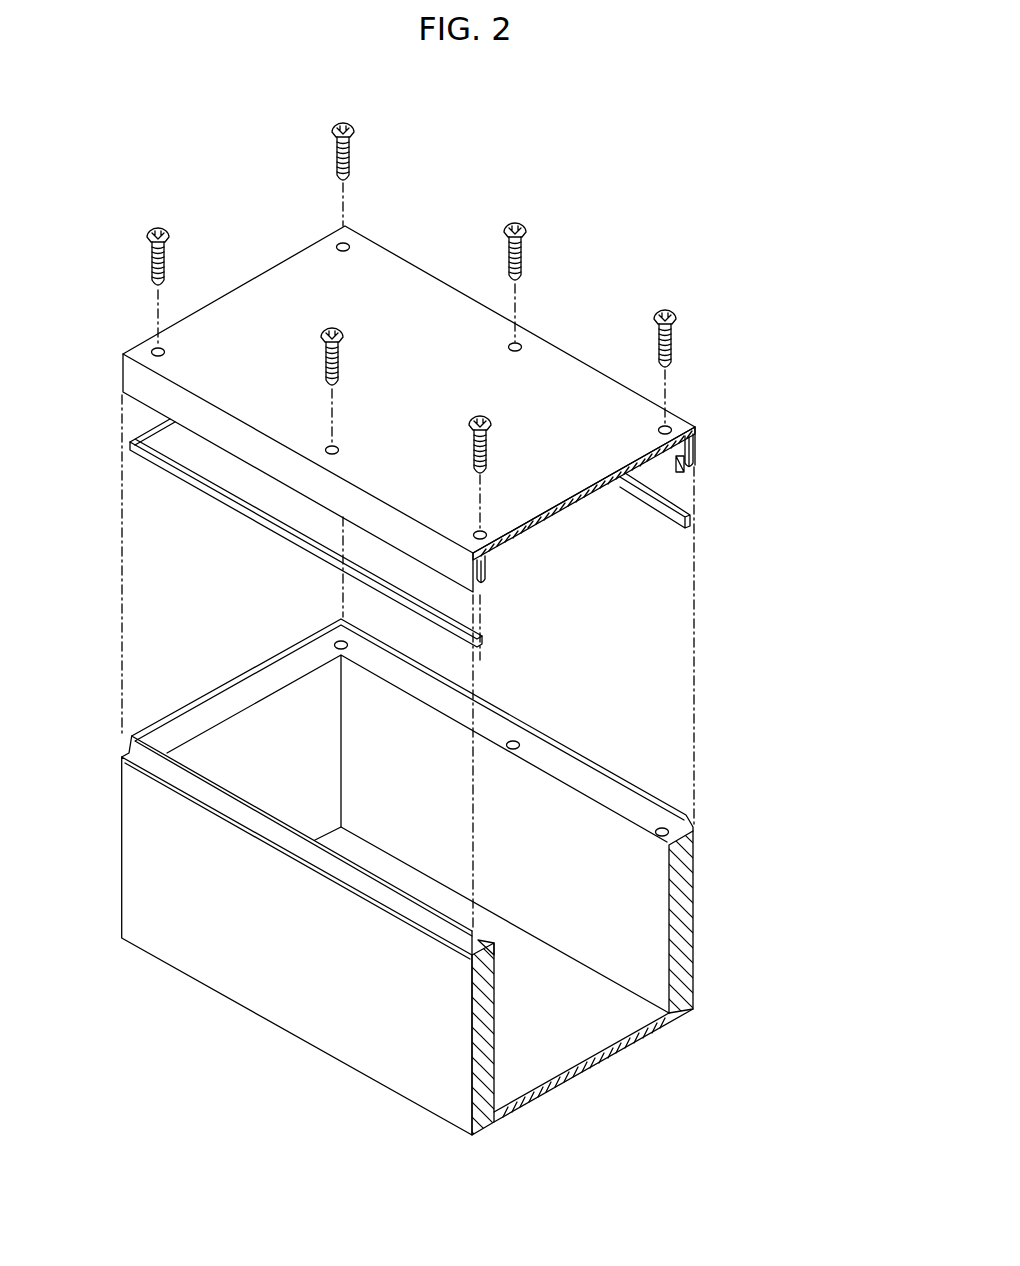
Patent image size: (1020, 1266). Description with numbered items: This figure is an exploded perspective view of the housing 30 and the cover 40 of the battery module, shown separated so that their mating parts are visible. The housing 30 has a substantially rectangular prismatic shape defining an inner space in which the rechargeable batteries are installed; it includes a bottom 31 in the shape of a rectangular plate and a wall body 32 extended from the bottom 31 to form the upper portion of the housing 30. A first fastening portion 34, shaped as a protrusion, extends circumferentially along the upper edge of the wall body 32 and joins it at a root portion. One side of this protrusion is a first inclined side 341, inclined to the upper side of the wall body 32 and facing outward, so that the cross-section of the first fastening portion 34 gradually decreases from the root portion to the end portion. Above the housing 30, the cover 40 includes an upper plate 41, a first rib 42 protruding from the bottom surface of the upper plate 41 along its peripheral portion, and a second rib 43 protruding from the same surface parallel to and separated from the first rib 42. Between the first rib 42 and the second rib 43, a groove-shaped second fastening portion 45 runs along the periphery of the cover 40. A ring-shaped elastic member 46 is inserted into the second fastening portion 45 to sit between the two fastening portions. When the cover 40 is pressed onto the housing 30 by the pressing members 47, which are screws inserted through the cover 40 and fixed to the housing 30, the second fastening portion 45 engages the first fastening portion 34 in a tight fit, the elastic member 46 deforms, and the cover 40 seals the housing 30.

The housing 30 is at (573, 738).
The bottom 31 is at (580, 1045).
The wall body 32 is at (648, 912).
The first fastening portion 34 is at (523, 722).
The first inclined side 341 is at (432, 927).
The cover 40 is at (558, 323).
The upper plate 41 is at (573, 511).
The first rib 42 is at (697, 448).
The second rib 43 is at (675, 472).
The second fastening portion 45 is at (697, 452).
The elastic member 46 is at (663, 517).
The pressing member 47 is at (671, 340).